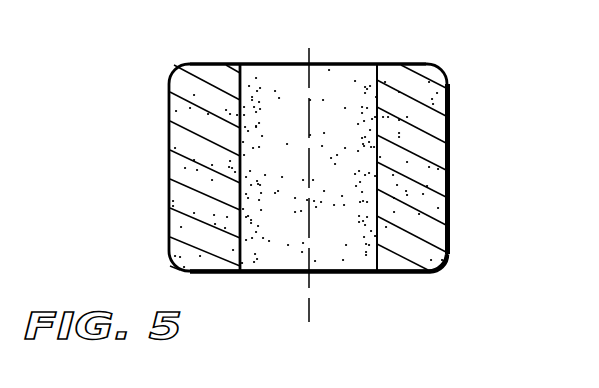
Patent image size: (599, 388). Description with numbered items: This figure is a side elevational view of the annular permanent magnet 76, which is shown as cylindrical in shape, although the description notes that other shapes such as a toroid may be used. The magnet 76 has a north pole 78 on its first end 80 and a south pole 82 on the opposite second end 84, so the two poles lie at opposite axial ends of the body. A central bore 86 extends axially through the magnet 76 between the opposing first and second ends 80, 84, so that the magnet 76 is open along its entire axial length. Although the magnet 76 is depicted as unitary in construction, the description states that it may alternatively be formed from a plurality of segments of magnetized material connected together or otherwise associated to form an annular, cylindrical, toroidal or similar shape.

The annular permanent magnet 76 is at (455, 269).
The north pole 78 is at (294, 29).
The first end 80 is at (412, 62).
The south pole 82 is at (318, 343).
The second end 84 is at (405, 275).
The central bore 86 is at (330, 80).